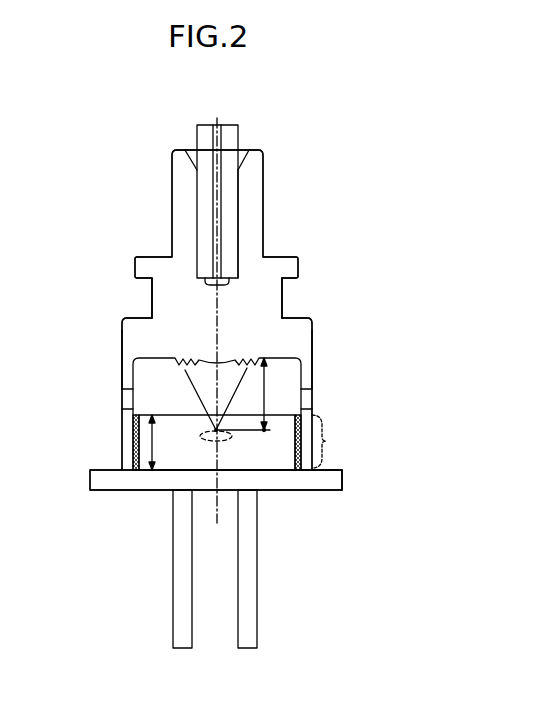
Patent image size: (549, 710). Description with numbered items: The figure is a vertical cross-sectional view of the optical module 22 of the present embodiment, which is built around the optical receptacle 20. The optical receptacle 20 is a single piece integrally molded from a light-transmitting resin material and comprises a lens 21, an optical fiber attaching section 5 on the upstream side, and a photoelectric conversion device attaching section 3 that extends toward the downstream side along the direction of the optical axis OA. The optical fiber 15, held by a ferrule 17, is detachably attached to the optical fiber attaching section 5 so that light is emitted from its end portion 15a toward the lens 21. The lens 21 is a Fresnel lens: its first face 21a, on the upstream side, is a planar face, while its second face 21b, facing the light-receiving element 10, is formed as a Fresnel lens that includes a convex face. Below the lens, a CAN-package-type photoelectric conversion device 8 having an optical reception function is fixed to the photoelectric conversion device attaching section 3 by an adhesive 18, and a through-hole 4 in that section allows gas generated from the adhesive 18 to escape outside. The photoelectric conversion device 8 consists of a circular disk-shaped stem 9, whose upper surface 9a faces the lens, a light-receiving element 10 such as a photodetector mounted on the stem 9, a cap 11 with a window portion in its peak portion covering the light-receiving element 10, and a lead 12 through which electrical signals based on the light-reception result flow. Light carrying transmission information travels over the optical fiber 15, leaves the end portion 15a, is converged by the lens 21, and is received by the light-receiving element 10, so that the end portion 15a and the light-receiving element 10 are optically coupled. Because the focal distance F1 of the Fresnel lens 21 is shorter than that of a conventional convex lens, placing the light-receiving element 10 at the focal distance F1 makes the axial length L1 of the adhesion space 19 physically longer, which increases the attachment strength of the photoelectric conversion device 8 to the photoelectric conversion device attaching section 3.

The optical module 22 is at (98, 166).
The optical receptacle 20 is at (171, 195).
The optical fiber attaching section 5 is at (171, 232).
The optical fiber 15 is at (222, 199).
The ferrule 17 is at (238, 232).
The end portion of the optical fiber 15a is at (228, 283).
The optical axis OA is at (217, 338).
The lens 21 is at (62, 296).
The first face 21a is at (206, 281).
The second face 21b is at (190, 376).
The photoelectric conversion device attaching section 3 is at (121, 375).
The through-hole 4 is at (121, 400).
The adhesive 18 is at (134, 424).
The adhesion space 19 is at (322, 442).
The cap 11 is at (272, 462).
The light-receiving element 10 is at (197, 428).
The focal distance F1 is at (243, 395).
The axial length L1 is at (162, 442).
The stem 9 is at (106, 491).
The base top surface 9a is at (342, 470).
The photoelectric conversion device 8 is at (90, 480).
The lead 12 is at (173, 571).